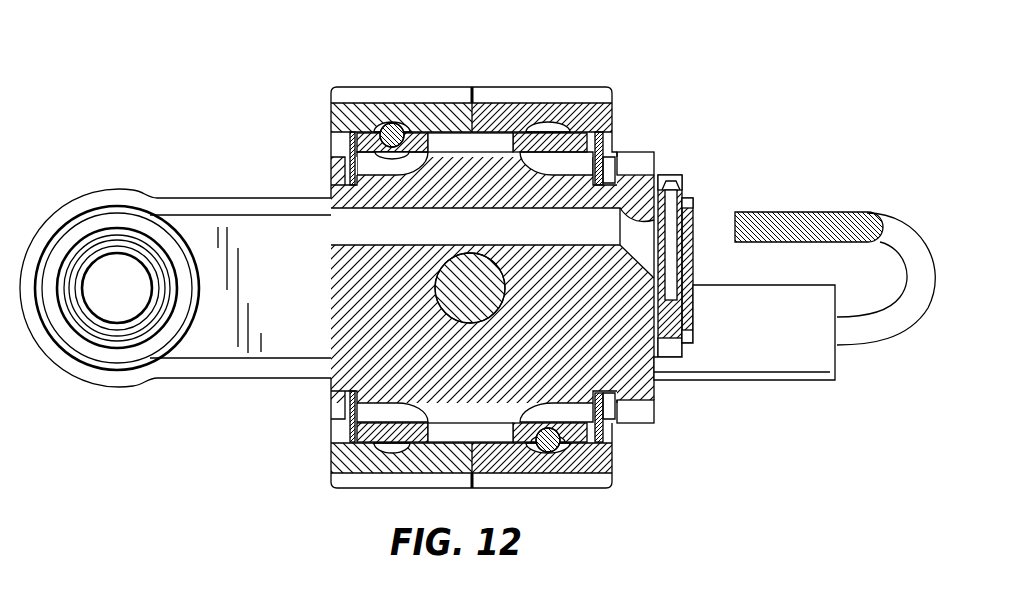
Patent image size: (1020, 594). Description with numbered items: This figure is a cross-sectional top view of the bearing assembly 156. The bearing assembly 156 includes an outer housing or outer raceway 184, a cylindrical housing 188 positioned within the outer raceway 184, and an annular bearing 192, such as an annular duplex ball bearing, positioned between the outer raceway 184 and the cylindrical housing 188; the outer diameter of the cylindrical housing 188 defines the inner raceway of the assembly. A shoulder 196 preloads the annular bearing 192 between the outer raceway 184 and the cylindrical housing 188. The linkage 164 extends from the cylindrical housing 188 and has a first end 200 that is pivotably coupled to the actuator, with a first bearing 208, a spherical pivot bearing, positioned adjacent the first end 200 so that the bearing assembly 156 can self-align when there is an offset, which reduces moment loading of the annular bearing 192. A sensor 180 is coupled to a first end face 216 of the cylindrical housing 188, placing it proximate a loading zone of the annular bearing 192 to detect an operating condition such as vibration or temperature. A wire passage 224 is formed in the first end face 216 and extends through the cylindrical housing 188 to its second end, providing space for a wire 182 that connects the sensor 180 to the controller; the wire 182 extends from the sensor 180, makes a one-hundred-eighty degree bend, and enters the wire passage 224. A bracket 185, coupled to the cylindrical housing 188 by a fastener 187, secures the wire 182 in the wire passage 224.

The bearing assembly 156 is at (570, 55).
The linkage 164 is at (252, 238).
The sensor 180 is at (778, 380).
The wire 182 is at (840, 213).
The outer raceway 184 is at (367, 113).
The bracket 185 is at (668, 175).
The fastener 187 is at (688, 233).
The cylindrical housing 188 is at (328, 195).
The annular bearing 192 is at (498, 147).
The shoulder 196 is at (617, 160).
The first end 200 is at (63, 230).
The first bearing 208 is at (142, 318).
The first end face 216 is at (645, 393).
The wire passage 224 is at (688, 205).